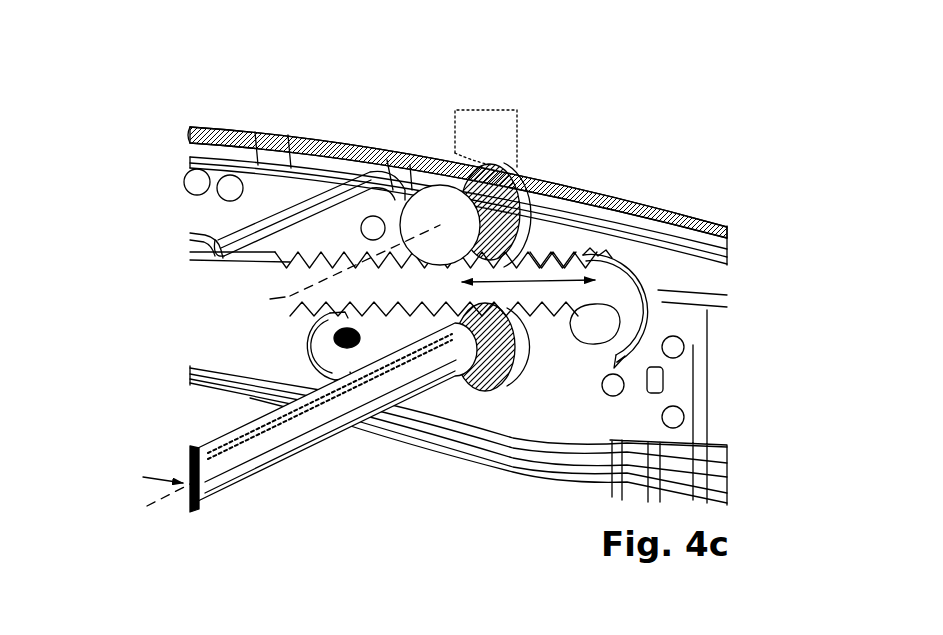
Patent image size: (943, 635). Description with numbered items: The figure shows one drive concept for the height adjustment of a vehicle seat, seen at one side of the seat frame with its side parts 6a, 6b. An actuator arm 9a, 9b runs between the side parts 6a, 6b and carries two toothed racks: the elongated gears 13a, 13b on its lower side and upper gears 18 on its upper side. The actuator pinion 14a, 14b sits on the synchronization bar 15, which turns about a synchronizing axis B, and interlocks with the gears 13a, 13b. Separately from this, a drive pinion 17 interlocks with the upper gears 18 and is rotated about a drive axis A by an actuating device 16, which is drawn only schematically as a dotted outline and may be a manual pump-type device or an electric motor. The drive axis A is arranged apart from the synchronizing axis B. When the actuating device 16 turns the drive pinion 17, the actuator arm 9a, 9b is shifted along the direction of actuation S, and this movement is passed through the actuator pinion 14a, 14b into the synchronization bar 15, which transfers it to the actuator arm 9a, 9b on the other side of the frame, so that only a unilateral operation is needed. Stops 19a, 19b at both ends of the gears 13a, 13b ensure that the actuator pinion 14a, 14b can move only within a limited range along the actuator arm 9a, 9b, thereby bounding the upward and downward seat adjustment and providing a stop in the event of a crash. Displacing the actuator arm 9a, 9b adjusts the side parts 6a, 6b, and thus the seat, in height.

The side part 6a is at (460, 217).
The side part 6b is at (638, 245).
The actuator arm 9a is at (327, 275).
The actuator arm 9b is at (205, 283).
The gear 13a is at (434, 429).
The gear 13b is at (555, 315).
The actuator pinion 14a is at (411, 406).
The actuator pinion 14b is at (457, 385).
The synchronization bar 15 is at (235, 470).
The actuating device 16 is at (490, 110).
The drive pinion 17 is at (437, 195).
The upper gears 18 is at (556, 247).
The stop 19a is at (458, 280).
The stop 19b is at (637, 328).
The direction of actuation S is at (575, 278).
The drive axis A is at (341, 276).
The synchronizing axis B is at (152, 486).